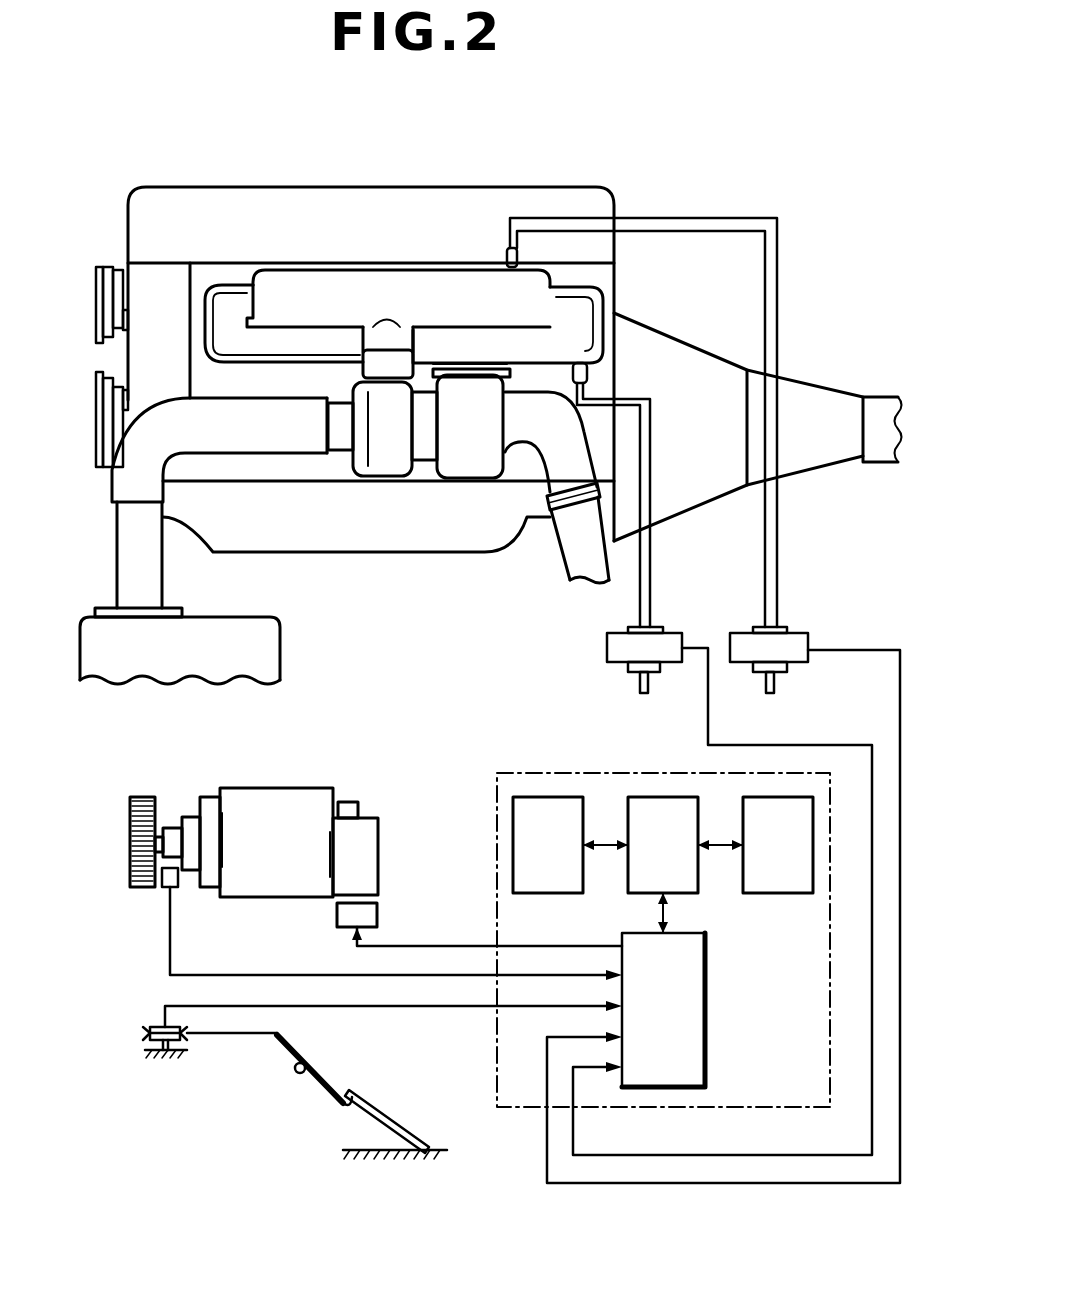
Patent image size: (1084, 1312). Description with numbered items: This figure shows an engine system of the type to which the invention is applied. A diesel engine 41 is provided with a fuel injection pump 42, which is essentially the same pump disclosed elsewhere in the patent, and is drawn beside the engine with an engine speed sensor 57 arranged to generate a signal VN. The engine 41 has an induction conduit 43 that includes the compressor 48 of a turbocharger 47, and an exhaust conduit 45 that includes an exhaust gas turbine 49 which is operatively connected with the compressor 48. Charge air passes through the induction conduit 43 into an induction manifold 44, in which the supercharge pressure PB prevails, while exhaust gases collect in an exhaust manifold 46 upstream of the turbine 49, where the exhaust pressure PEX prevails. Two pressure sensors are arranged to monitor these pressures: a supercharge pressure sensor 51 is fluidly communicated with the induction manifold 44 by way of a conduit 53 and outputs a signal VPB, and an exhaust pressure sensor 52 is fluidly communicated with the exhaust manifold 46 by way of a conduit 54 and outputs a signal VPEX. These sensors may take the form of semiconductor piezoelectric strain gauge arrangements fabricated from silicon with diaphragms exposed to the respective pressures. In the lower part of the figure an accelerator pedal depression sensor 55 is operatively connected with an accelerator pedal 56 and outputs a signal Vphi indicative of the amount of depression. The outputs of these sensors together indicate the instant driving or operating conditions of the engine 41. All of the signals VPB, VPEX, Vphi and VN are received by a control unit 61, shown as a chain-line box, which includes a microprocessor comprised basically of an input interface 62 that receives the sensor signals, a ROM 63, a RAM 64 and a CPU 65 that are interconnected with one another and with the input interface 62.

The diesel engine 41 is at (390, 187).
The fuel injection pump 42 is at (303, 788).
The induction conduit 43 is at (337, 445).
The induction manifold 44 is at (450, 287).
The exhaust conduit 45 is at (535, 440).
The exhaust manifold 46 is at (577, 330).
The turbocharger 47 is at (420, 492).
The compressor 48 is at (383, 463).
The exhaust gas turbine 49 is at (477, 462).
The supercharge pressure sensor 51 is at (797, 632).
The exhaust pressure sensor 52 is at (668, 632).
The conduit 53 is at (777, 563).
The conduit 54 is at (652, 557).
The accelerator pedal depression sensor 55 is at (157, 1028).
The accelerator pedal 56 is at (370, 1103).
The engine speed sensor 57 is at (163, 890).
The control unit 61 is at (527, 1107).
The input interface 62 is at (705, 1062).
The ROM 63 is at (573, 797).
The RAM 64 is at (768, 797).
The CPU 65 is at (652, 797).